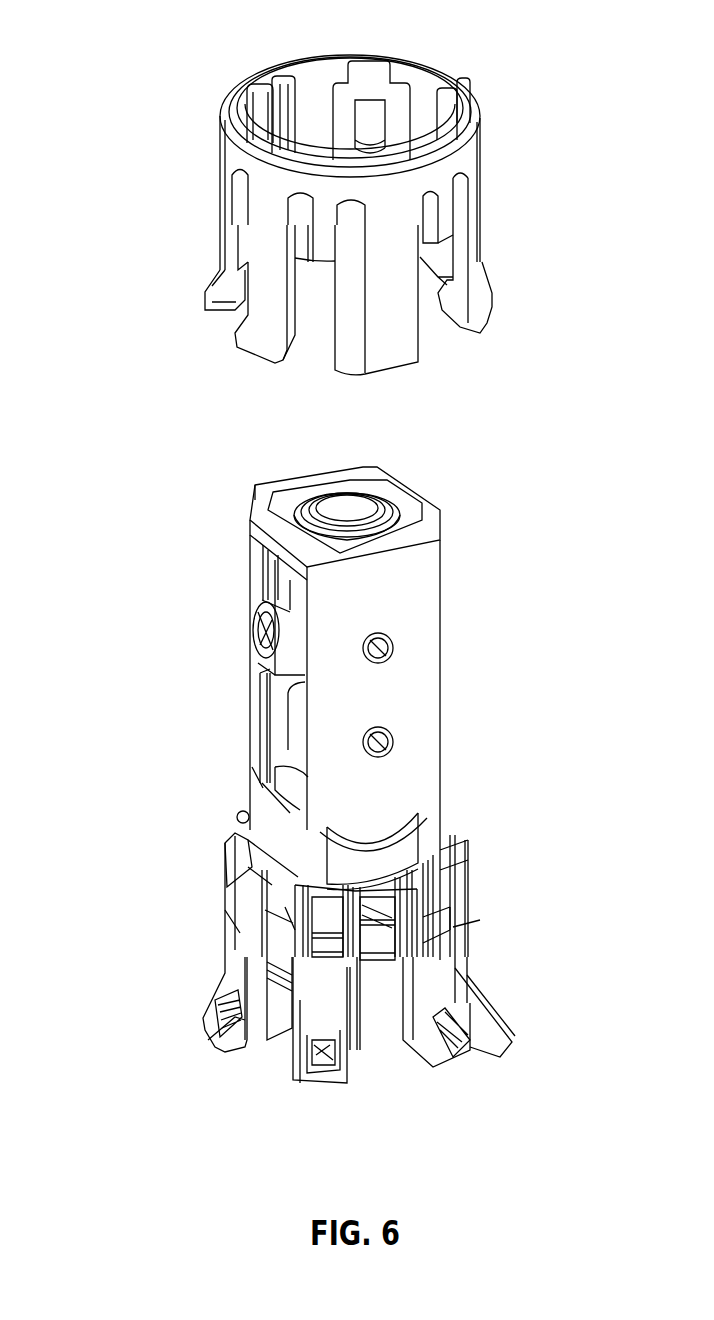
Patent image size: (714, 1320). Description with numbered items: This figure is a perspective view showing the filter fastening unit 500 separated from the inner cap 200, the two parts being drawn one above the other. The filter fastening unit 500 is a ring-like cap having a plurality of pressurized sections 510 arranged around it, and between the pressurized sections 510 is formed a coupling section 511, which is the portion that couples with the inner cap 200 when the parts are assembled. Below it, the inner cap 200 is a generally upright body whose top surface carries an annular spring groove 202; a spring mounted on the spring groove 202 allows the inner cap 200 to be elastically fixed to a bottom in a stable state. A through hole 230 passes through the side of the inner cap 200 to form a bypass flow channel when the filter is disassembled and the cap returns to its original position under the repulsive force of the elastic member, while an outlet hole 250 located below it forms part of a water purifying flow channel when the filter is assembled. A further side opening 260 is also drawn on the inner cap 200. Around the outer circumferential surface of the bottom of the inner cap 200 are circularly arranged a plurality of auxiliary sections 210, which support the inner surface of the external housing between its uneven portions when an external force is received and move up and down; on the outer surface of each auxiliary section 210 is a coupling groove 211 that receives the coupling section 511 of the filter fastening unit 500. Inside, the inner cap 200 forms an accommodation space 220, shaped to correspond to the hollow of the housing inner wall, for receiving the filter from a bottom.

The filter fastening unit 500 is at (178, 102).
The pressurized sections 510 is at (480, 220).
The coupling section 511 is at (330, 252).
The inner cap 200 is at (218, 518).
The spring groove 202 is at (410, 515).
The side hole 260 is at (250, 637).
The through hole 230 is at (395, 650).
The outlet hole 250 is at (393, 740).
The auxiliary sections 210 is at (490, 1040).
The coupling groove 211 is at (440, 945).
The accommodation space 220 is at (380, 1038).